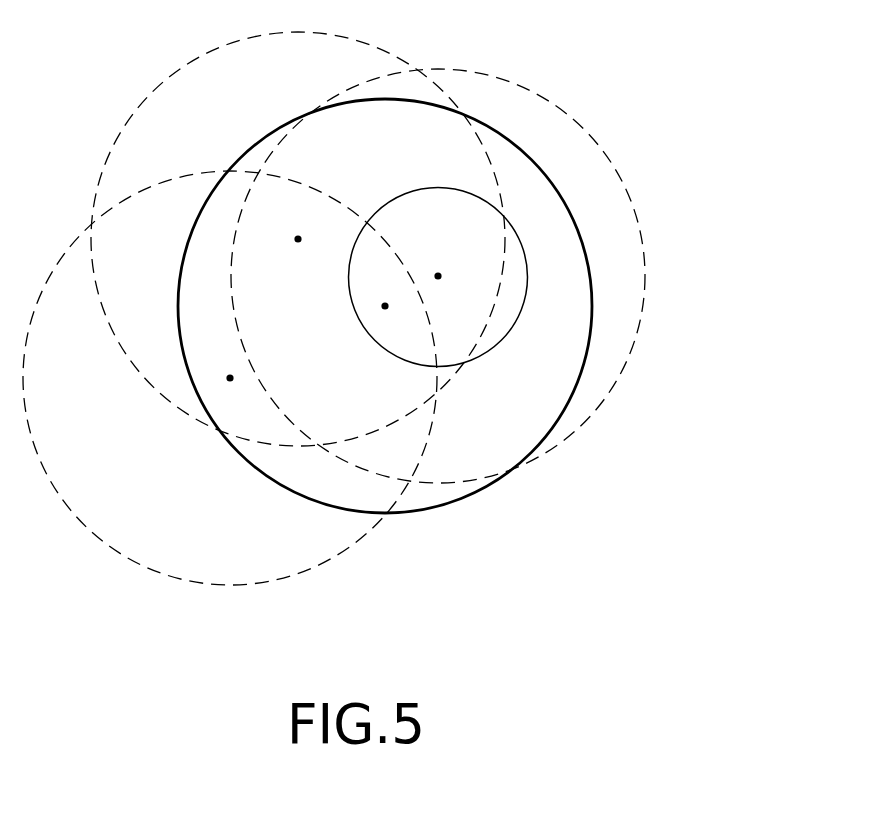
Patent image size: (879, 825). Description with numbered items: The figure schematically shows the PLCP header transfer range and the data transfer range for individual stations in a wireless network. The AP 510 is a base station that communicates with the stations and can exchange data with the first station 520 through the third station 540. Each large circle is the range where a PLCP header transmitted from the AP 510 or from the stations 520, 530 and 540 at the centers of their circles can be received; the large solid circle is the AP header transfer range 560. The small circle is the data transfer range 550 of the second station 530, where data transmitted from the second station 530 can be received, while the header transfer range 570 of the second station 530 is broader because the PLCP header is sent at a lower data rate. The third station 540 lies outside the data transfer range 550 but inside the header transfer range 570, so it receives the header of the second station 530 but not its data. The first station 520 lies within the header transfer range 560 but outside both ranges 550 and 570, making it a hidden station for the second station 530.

The AP 510 is at (386, 331).
The STA #1 520 is at (237, 404).
The STA #2 530 is at (438, 250).
The STA #3 540 is at (299, 265).
The STA #2 data transfer range 550 is at (512, 217).
The AP header transfer range 560 is at (437, 514).
The STA #2 header transfer range 570 is at (643, 301).